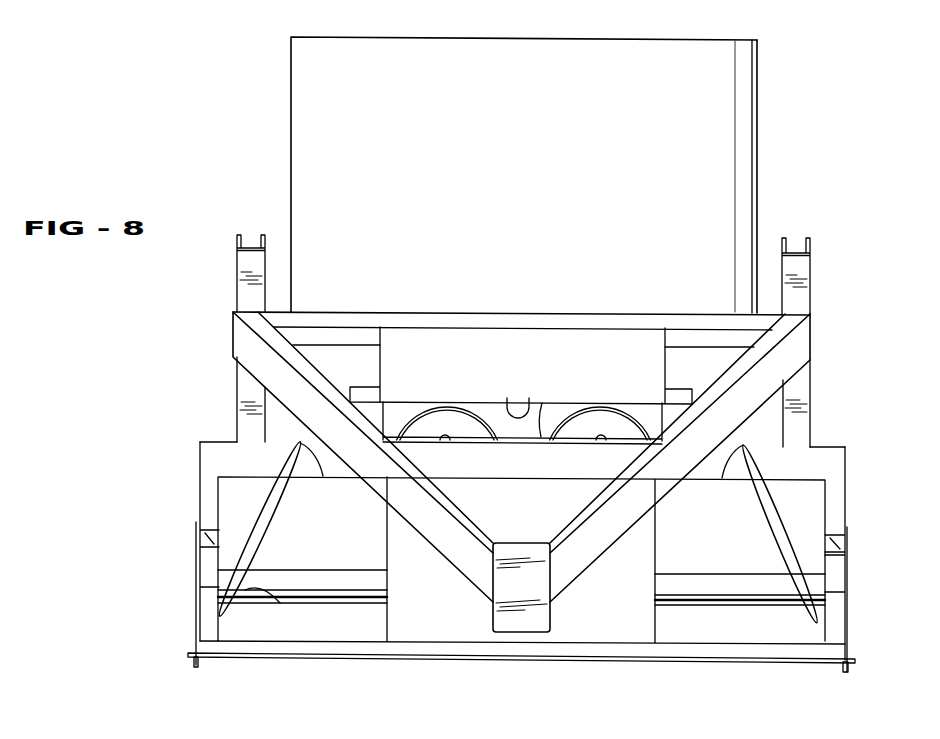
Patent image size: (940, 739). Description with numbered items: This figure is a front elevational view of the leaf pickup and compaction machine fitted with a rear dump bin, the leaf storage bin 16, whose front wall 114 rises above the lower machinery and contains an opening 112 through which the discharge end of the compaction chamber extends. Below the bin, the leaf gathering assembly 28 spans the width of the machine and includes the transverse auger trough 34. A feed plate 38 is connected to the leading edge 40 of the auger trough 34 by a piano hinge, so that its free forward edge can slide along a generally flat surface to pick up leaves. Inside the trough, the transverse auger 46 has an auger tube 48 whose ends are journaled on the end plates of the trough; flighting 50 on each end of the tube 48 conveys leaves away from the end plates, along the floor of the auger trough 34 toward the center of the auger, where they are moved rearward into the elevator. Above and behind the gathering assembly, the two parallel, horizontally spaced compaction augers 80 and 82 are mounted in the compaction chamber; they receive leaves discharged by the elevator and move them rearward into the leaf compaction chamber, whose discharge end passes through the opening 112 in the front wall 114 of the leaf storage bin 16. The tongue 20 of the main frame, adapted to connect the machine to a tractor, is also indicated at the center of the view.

The leaf storage bin 16 is at (757, 142).
The tongue 20 is at (537, 627).
The leaf gathering assembly 28 is at (132, 527).
The auger trough 34 is at (202, 602).
The feed plate 38 is at (263, 656).
The leading edge 40 is at (221, 641).
The transverse auger 46 is at (827, 492).
The auger tube 48 is at (735, 593).
The flighting 50 is at (263, 588).
The compaction auger 80 is at (590, 425).
The compaction auger 82 is at (423, 418).
The opening 112 is at (507, 398).
The front wall 114 is at (322, 148).